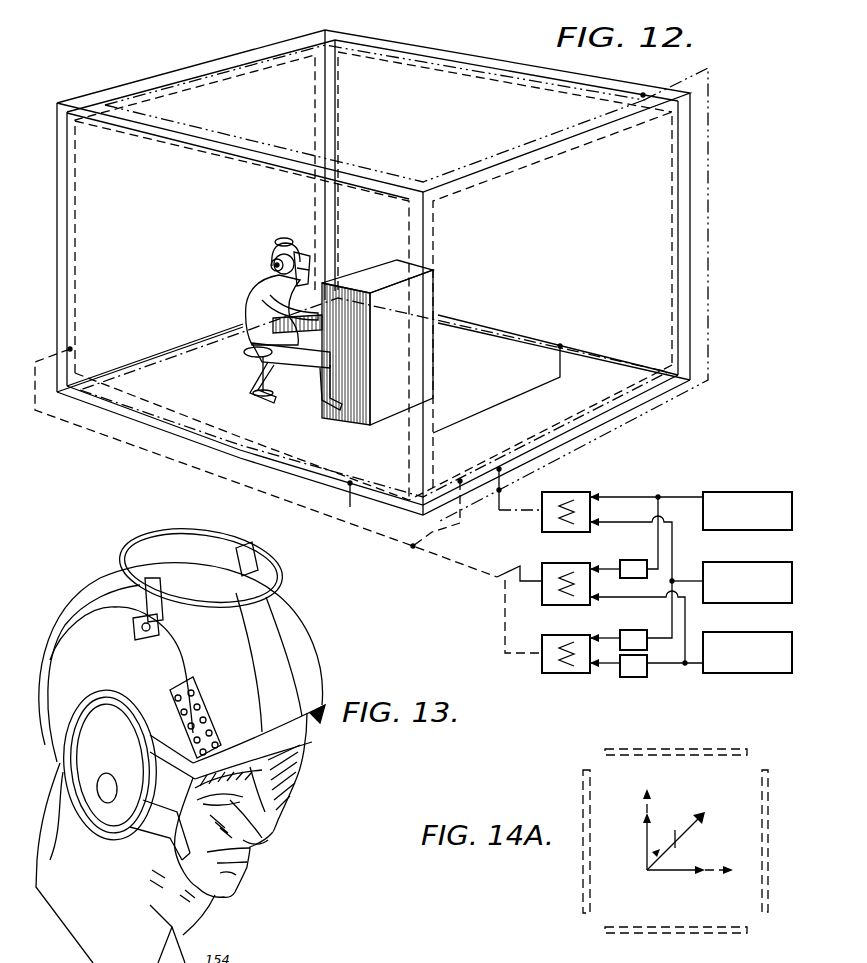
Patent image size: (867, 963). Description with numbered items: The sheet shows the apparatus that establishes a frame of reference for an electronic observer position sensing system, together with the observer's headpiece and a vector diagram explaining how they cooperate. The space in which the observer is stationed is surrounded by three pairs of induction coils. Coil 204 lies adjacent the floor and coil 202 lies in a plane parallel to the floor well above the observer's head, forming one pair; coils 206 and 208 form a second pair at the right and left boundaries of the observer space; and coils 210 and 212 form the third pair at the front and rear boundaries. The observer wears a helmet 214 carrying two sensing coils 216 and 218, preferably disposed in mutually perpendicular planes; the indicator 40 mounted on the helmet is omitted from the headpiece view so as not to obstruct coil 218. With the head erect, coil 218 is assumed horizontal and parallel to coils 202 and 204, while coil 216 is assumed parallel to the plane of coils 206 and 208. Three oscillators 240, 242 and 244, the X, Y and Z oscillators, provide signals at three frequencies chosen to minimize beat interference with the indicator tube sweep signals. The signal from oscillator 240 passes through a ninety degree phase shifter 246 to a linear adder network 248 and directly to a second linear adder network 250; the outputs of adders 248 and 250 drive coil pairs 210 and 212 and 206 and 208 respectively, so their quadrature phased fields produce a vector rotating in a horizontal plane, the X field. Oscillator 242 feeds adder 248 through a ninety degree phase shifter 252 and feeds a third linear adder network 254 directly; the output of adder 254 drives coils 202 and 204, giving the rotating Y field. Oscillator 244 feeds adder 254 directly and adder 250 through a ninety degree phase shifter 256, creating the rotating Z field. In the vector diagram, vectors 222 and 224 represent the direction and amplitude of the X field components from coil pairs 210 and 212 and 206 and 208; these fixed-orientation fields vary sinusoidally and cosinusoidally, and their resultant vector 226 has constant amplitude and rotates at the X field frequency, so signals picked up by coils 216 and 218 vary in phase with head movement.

In FIG. 12, the indicator 40 is at (309, 277).
In FIG. 12, the induction coil 202 is at (182, 121).
In FIG. 12, the induction coil 204 is at (168, 416).
In FIG. 12, the induction coil 206 is at (208, 433).
In FIG. 14A, the induction coil 206 is at (583, 878).
In FIG. 12, the induction coil 208 is at (492, 320).
In FIG. 14A, the induction coil 208 is at (770, 798).
In FIG. 12, the induction coil 210 is at (438, 465).
In FIG. 14A, the induction coil 210 is at (695, 935).
In FIG. 12, the induction coil 212 is at (79, 236).
In FIG. 14A, the induction coil 212 is at (701, 748).
In FIG. 12, the helmet 214 is at (294, 246).
In FIG. 13, the helmet 214 is at (84, 590).
In FIG. 12, the sensing coil 216 is at (268, 263).
In FIG. 13, the sensing coil 216 is at (111, 703).
In FIG. 14A, the sensing coil 216 is at (680, 843).
In FIG. 12, the sensing coil 218 is at (281, 238).
In FIG. 13, the sensing coil 218 is at (277, 580).
In FIG. 14A, the vector 222 is at (645, 848).
In FIG. 14A, the vector 224 is at (680, 876).
In FIG. 14A, the resultant vector 226 is at (700, 828).
In FIG. 12, the X oscillator 240 is at (743, 633).
In FIG. 12, the Y oscillator 242 is at (737, 561).
In FIG. 12, the Z oscillator 244 is at (773, 477).
In FIG. 12, the 90° phase shifter 246 is at (630, 678).
In FIG. 12, the linear adder network 248 is at (557, 634).
In FIG. 12, the linear adder network 250 is at (562, 563).
In FIG. 12, the 90° phase shifter 252 is at (653, 619).
In FIG. 12, the linear adder network 254 is at (590, 492).
In FIG. 12, the 90° phase shifter 256 is at (645, 560).